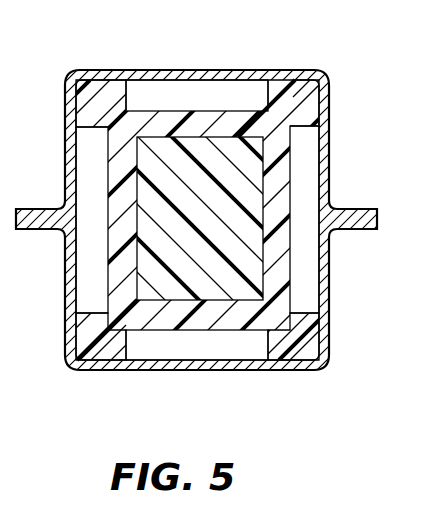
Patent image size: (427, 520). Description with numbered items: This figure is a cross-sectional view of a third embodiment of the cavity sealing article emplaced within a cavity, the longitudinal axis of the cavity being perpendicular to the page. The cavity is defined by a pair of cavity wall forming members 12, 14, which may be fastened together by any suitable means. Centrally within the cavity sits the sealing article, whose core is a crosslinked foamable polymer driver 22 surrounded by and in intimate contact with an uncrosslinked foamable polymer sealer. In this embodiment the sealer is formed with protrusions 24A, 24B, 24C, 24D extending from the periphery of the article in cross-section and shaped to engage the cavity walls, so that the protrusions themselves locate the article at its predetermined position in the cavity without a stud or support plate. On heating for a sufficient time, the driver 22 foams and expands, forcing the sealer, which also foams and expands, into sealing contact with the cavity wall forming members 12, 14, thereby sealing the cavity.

The cavity wall forming member 12 is at (176, 73).
The cavity wall forming member 14 is at (212, 370).
The crosslinked foamable polymer driver 22 is at (250, 263).
The protrusion 24A is at (103, 90).
The protrusion 24B is at (298, 97).
The protrusion 24C is at (310, 348).
The protrusion 24D is at (110, 348).